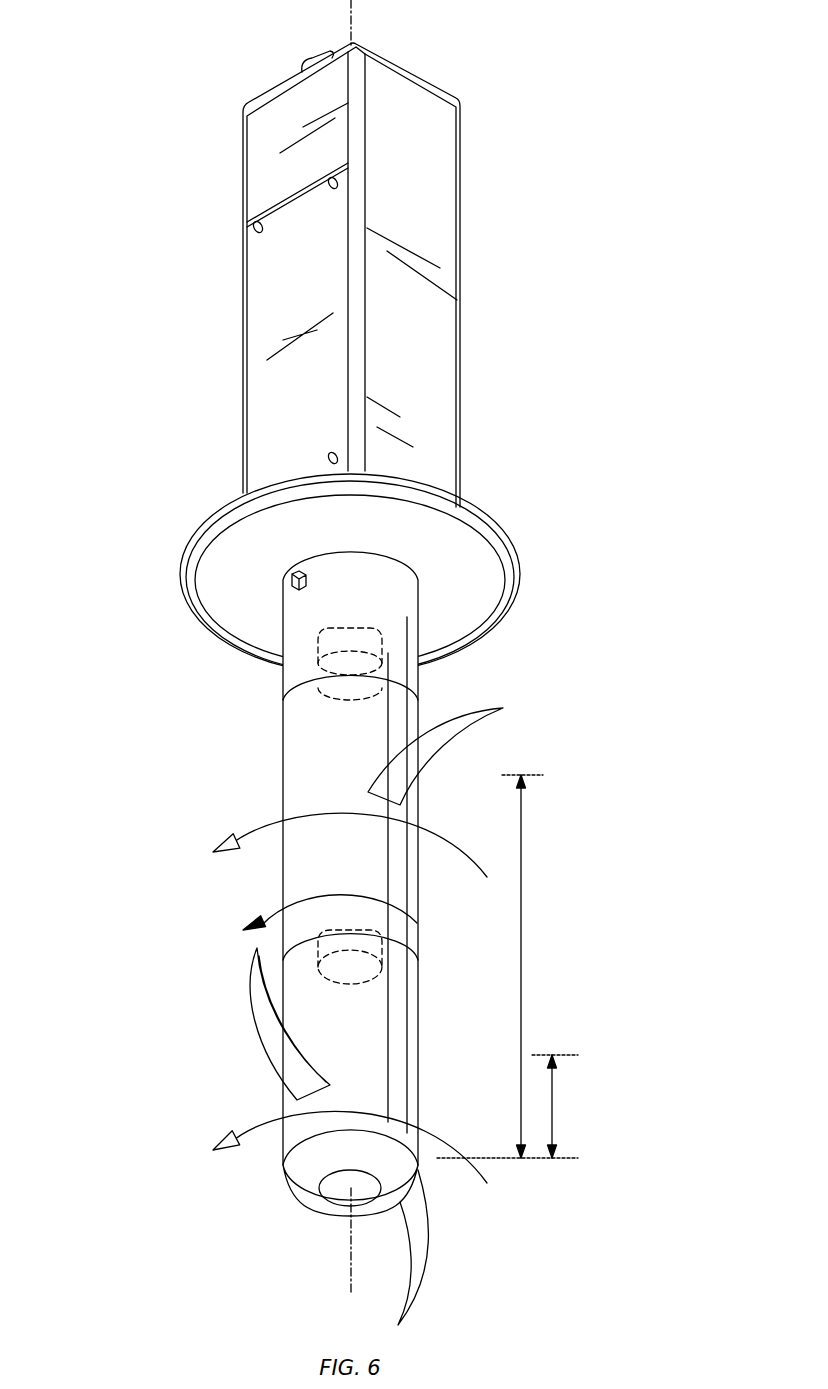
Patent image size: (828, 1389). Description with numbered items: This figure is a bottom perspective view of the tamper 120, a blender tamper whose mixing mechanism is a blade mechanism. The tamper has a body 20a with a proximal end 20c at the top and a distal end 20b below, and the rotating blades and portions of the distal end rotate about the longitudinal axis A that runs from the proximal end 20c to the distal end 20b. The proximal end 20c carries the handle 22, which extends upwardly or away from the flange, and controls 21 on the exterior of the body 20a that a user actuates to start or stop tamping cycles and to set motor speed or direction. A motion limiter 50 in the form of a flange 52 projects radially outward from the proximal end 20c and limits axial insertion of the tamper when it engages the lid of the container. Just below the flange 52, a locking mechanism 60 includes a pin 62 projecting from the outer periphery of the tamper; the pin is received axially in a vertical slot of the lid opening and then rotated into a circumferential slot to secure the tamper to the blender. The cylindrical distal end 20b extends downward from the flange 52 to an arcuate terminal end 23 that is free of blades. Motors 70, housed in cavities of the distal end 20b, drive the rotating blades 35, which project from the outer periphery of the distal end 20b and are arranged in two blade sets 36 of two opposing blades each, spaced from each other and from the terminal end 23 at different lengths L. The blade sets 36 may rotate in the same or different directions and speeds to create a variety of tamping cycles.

The tamper 120 is at (135, 305).
The longitudinal axis A is at (356, 13).
The proximal end 20c is at (574, 52).
The distal end 20b is at (574, 1207).
The body 20a is at (440, 357).
The handle 22 is at (432, 155).
The controls 21 is at (310, 60).
The motion limiter 50 is at (192, 518).
The flange 52 is at (205, 543).
The locking mechanism 60 is at (268, 593).
The pin 62 is at (310, 582).
The motor 70 is at (333, 688).
The terminal end 23 is at (333, 1196).
The rotating blade 35 is at (448, 722).
The blade set 36 is at (247, 808).
The length L is at (521, 900).